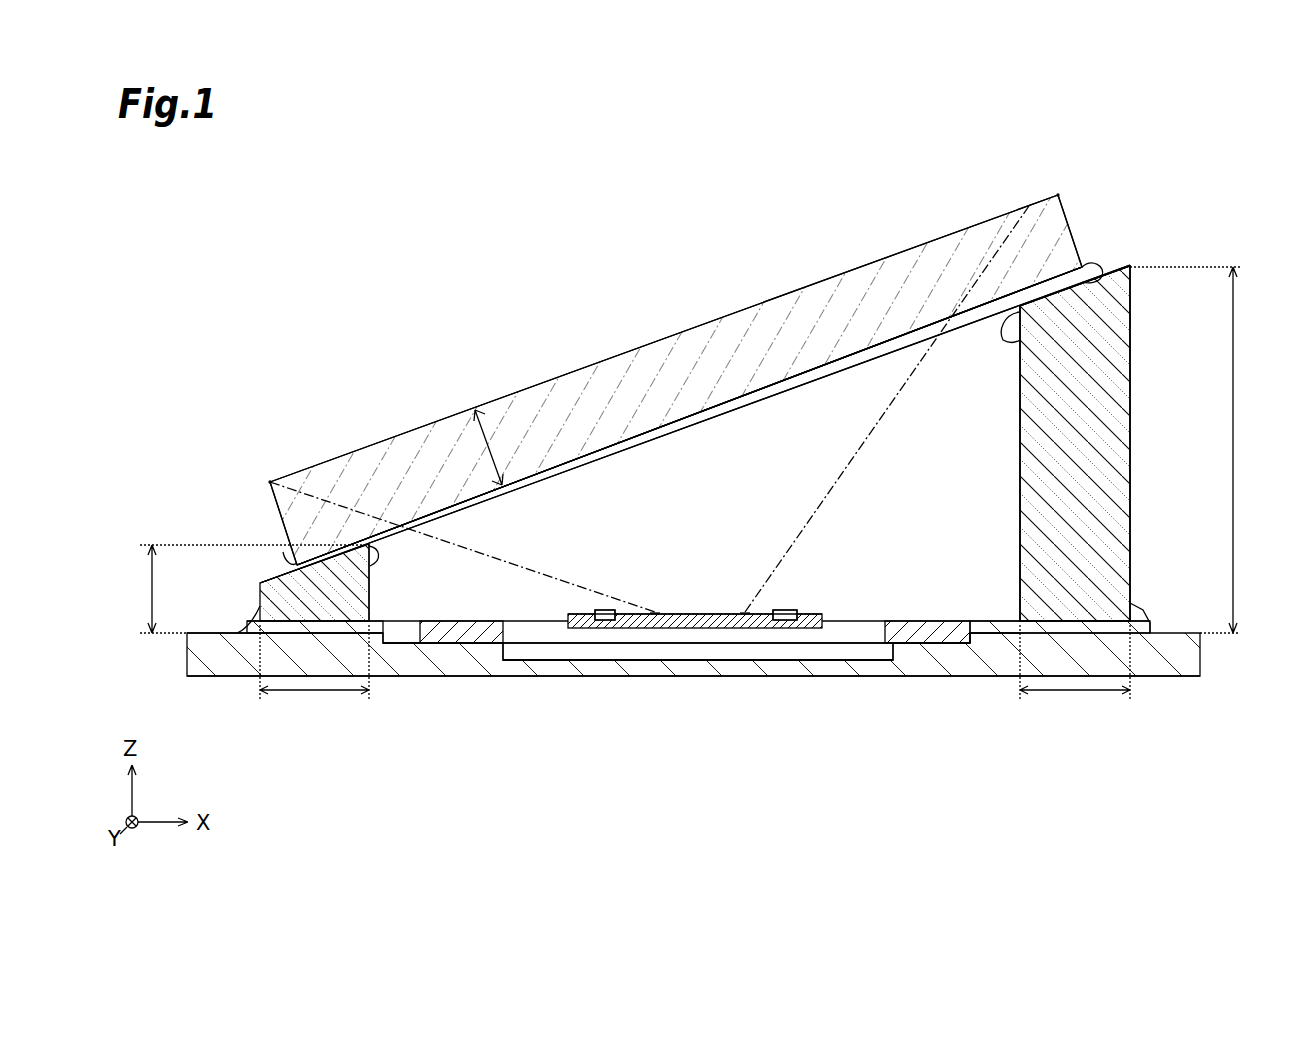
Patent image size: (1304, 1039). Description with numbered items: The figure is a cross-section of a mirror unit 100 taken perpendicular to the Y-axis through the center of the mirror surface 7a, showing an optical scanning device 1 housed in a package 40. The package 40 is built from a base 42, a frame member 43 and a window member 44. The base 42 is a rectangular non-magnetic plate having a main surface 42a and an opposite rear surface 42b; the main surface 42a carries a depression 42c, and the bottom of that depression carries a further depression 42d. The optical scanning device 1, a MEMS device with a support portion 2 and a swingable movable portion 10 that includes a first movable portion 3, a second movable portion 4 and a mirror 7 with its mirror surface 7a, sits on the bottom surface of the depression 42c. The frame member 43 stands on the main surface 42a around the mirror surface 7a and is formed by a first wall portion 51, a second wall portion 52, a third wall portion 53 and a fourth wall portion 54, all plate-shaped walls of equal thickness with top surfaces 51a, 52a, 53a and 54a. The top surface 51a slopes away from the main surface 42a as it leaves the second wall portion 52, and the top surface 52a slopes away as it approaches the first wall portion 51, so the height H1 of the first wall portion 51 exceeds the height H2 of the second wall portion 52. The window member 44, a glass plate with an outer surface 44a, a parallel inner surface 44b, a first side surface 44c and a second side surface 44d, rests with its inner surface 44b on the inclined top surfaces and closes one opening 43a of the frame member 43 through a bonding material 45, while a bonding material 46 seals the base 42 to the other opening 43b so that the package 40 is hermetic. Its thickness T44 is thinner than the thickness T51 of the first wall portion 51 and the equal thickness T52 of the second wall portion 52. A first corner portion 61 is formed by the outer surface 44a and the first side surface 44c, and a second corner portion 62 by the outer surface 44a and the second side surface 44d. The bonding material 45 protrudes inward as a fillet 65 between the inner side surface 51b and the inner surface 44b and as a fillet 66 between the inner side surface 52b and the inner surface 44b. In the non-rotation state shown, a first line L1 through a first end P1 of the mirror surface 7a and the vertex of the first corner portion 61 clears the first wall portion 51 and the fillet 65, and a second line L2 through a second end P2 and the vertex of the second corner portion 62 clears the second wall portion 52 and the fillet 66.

The mirror unit 100 is at (1190, 152).
The optical scanning device 1 is at (936, 618).
The support portion 2 is at (474, 645).
The first movable portion 3 is at (696, 645).
The second movable portion 4 is at (698, 651).
The mirror 7 is at (696, 615).
The mirror surface 7a is at (700, 612).
The movable portion 10 is at (822, 610).
The package 40 is at (1188, 677).
The base 42 is at (442, 663).
The main surface 42a is at (195, 633).
The rear surface 42b is at (219, 677).
The depression 42c is at (1005, 640).
The depression 42d is at (893, 650).
The frame member 43 is at (1130, 447).
The opening 43a is at (1008, 340).
The other opening 43b is at (1008, 580).
The window member 44 is at (617, 378).
The outer surface 44a is at (545, 382).
The inner surface 44b is at (637, 445).
The first side surface 44c is at (1072, 220).
The second side surface 44d is at (284, 523).
The bonding material 45 is at (1090, 262).
The bonding material 46 is at (1140, 660).
The first wall portion 51 is at (1108, 497).
The top surface 51a is at (1120, 270).
The inner side surface 51b is at (1008, 420).
The second wall portion 52 is at (258, 602).
The top surface 52a is at (260, 580).
The inner side surface 52b is at (371, 600).
The third wall portion 53 is at (805, 415).
The top surface 53a is at (708, 417).
The fourth wall portion 54 is at (695, 424).
The top surface 54a is at (689, 416).
The first corner portion 61 is at (1058, 195).
The second corner portion 62 is at (270, 482).
The fillet 65 is at (1003, 340).
The fillet 66 is at (380, 560).
The height of first wall portion H1 is at (1240, 447).
The height of second wall portion H2 is at (140, 590).
The thickness of window member T44 is at (485, 448).
The thickness of first wall portion T51 is at (1076, 692).
The thickness of second wall portion T52 is at (315, 692).
The first line L1 is at (843, 472).
The second line L2 is at (552, 577).
The first end P1 is at (748, 610).
The second end P2 is at (656, 612).